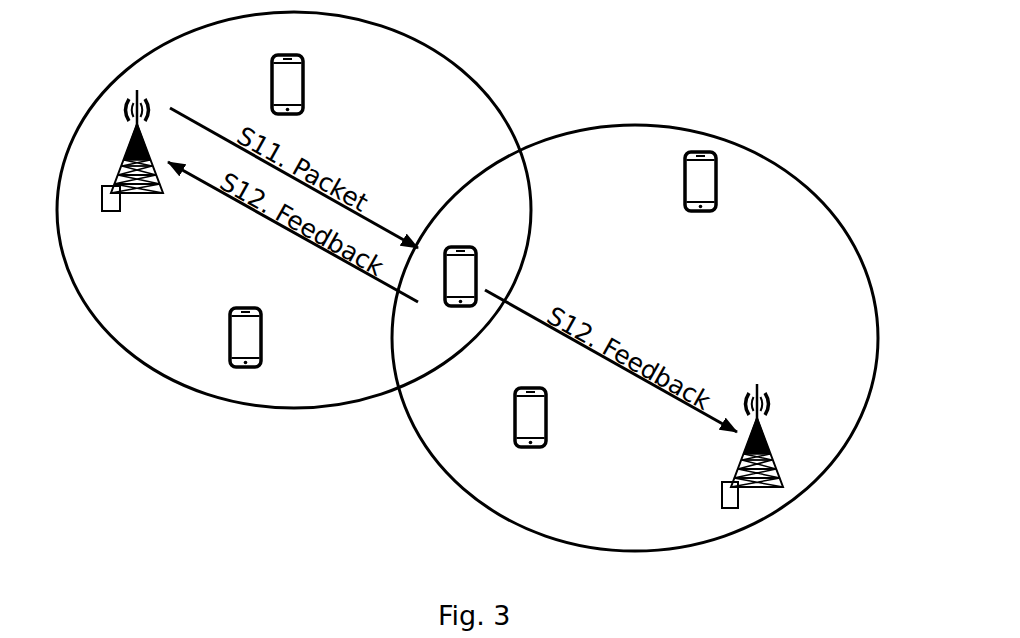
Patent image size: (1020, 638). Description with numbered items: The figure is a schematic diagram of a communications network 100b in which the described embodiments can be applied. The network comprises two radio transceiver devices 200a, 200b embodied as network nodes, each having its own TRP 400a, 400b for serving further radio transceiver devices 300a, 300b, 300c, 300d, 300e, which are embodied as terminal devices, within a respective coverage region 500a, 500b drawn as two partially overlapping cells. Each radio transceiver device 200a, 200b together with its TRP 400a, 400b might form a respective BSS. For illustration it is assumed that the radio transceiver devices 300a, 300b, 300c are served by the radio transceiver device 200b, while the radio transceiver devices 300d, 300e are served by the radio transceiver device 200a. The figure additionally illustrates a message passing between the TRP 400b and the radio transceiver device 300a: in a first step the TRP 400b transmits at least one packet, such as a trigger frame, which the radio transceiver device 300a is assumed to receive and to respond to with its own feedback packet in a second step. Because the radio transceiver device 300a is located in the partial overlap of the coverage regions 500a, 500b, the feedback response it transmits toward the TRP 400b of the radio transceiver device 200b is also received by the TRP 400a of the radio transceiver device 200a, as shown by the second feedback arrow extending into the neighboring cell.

The communications network 100b is at (624, 55).
The radio transceiver device 200a is at (722, 500).
The radio transceiver device 200b is at (110, 211).
The radio transceiver device 300a is at (477, 266).
The radio transceiver device 300b is at (303, 86).
The radio transceiver device 300c is at (318, 338).
The radio transceiver device 300d is at (605, 408).
The radio transceiver device 300e is at (685, 182).
The TRP 400a is at (757, 392).
The TRP 400b is at (137, 97).
The coverage region 500a is at (502, 518).
The coverage region 500b is at (140, 348).